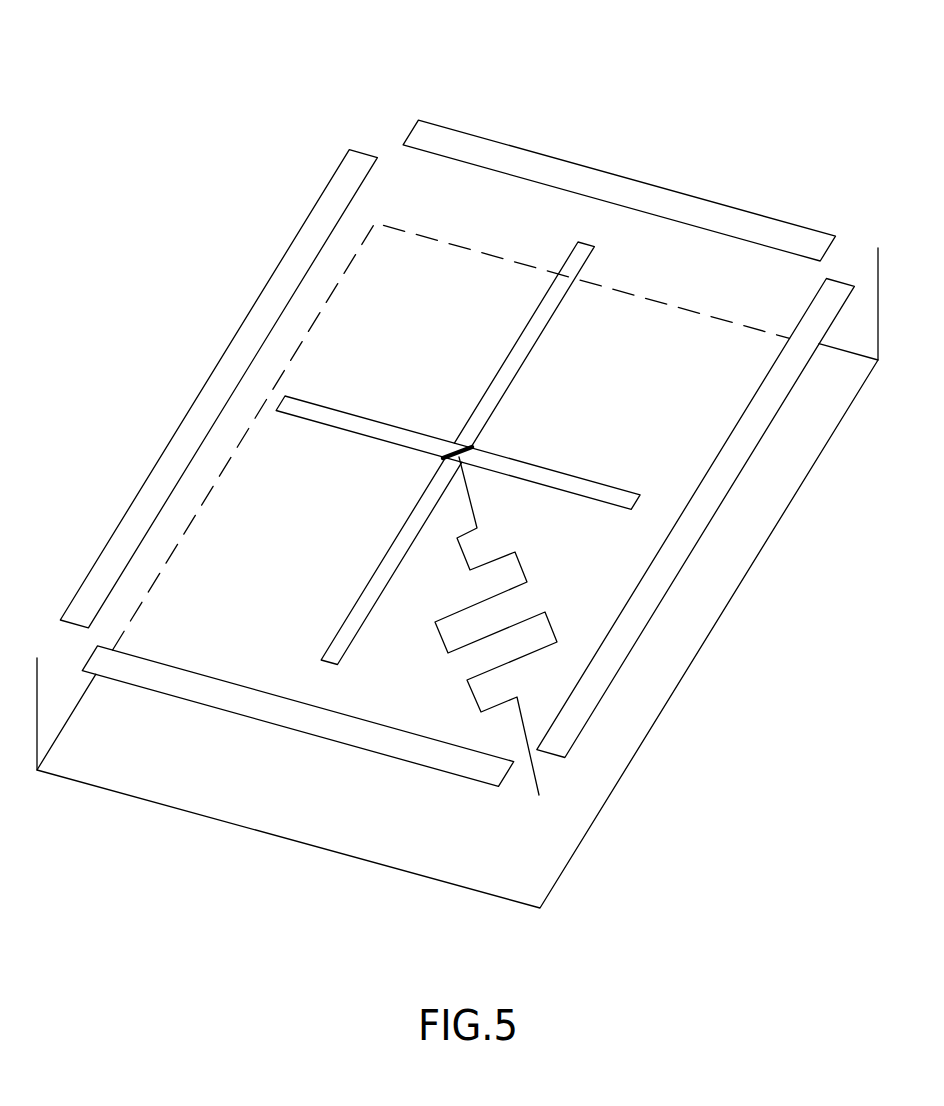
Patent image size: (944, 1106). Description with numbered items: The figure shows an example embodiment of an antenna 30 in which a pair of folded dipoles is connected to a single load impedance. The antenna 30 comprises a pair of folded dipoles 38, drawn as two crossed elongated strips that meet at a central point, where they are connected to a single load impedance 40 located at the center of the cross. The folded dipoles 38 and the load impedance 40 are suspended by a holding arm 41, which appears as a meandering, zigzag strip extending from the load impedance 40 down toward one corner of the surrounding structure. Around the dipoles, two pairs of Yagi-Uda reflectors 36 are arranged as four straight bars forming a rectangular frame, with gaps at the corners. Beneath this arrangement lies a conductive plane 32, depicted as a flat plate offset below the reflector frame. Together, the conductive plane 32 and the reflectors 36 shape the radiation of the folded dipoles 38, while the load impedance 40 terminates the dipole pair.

The antenna 30 is at (243, 107).
The conductive plane 32 is at (762, 548).
The Yagi-Uda reflectors 36 is at (292, 267).
The folded dipoles 38 is at (560, 305).
The load impedance 40 is at (460, 456).
The holding arm 41 is at (522, 567).